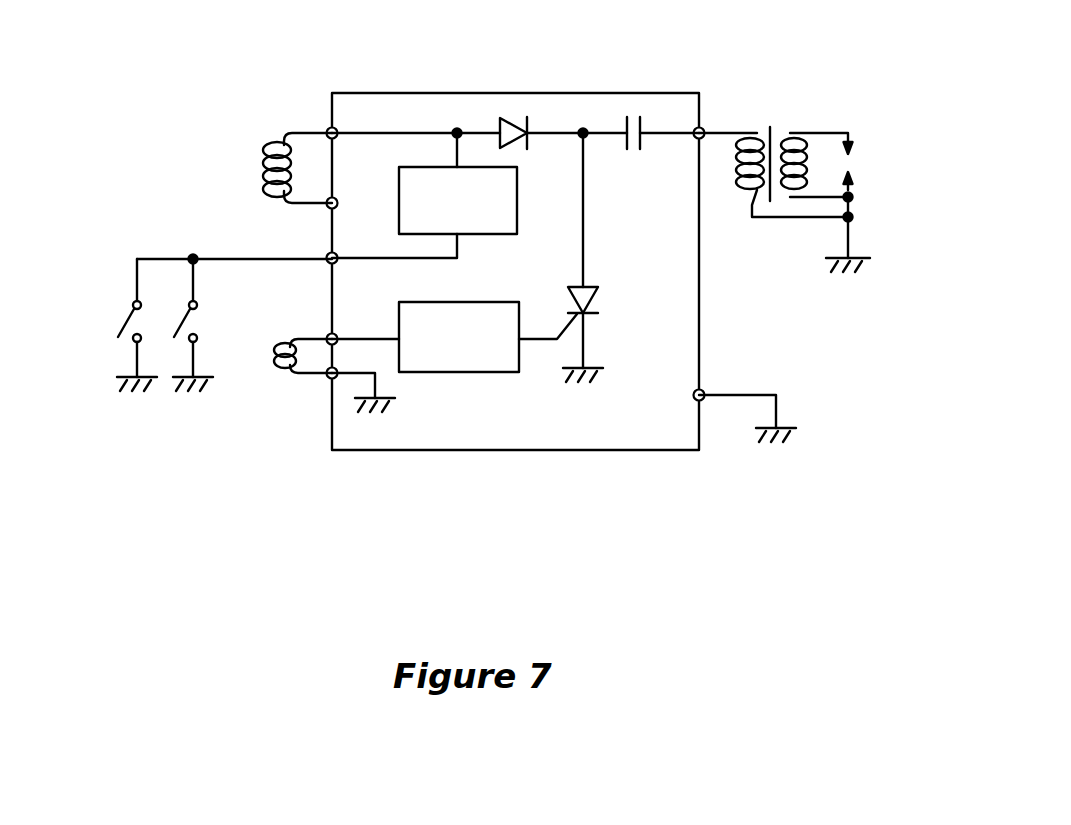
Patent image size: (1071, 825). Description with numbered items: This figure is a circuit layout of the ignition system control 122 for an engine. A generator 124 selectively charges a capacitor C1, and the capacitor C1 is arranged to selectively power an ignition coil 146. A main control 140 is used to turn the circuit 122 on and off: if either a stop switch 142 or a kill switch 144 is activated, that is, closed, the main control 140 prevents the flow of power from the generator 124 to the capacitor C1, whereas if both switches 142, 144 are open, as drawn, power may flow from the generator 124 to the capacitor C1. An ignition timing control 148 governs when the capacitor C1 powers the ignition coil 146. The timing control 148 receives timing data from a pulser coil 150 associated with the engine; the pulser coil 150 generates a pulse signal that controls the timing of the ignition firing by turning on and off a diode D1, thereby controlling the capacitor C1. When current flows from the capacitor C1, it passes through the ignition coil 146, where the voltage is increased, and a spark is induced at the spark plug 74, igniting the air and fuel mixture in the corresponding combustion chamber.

The ignition system control 122 is at (502, 465).
The generator 124 is at (263, 142).
The main control 140 is at (473, 234).
The stop switch 142 is at (122, 310).
The kill switch 144 is at (205, 323).
The ignition coil 146 is at (755, 133).
The ignition timing control 148 is at (477, 372).
The pulser coil 150 is at (278, 375).
The spark plug 74 is at (857, 158).
The capacitor C1 is at (642, 120).
The diode D1 is at (598, 298).